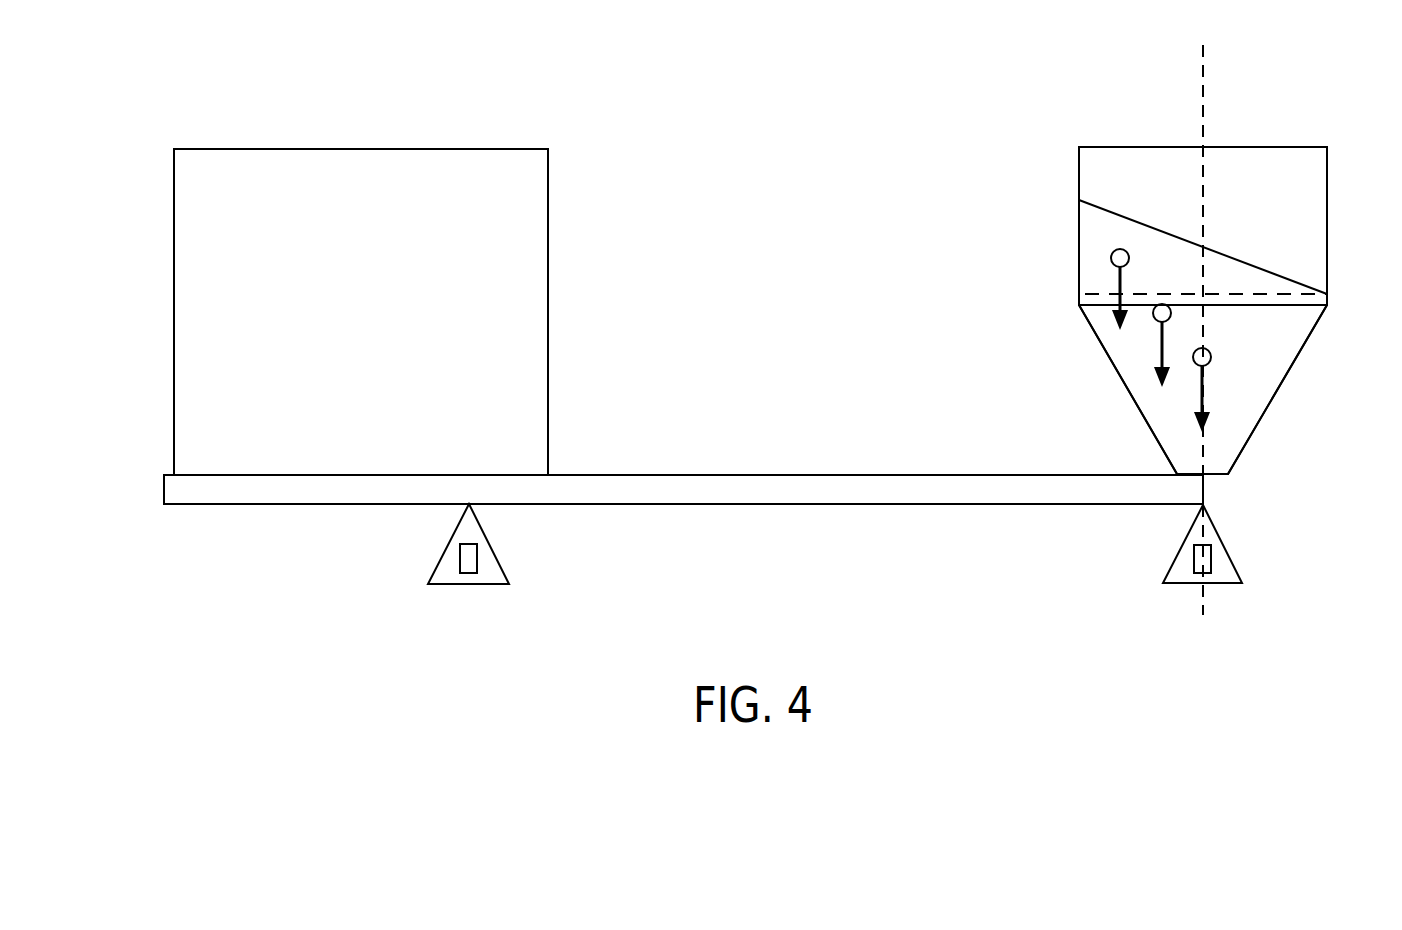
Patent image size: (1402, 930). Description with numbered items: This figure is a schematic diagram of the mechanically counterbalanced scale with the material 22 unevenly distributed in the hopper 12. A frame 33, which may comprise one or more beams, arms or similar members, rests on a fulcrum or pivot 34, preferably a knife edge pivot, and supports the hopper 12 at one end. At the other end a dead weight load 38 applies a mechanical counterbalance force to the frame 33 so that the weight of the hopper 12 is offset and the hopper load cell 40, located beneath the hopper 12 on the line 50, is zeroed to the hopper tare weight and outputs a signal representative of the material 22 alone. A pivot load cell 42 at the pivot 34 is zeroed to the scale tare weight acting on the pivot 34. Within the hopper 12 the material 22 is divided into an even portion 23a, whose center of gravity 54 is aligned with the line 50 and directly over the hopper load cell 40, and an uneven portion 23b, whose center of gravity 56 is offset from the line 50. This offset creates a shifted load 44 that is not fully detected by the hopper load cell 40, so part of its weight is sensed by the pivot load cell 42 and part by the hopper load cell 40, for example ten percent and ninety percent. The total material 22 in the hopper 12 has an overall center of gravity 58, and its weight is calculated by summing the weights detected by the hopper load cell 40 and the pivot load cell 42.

The hopper 12 is at (1300, 147).
The material 22 is at (1305, 235).
The even portion 23a is at (1256, 400).
The uneven portion 23b is at (1090, 228).
The frame 33 is at (661, 474).
The pivot 34 is at (450, 536).
The dead weight load 38 is at (548, 255).
The hopper load cell 40 is at (1211, 560).
The pivot load cell 42 is at (477, 558).
The shifted load 44 is at (1075, 110).
The line 50 is at (1205, 75).
The center of gravity 54 is at (1212, 355).
The center of gravity 56 is at (1110, 258).
The center of gravity 58 is at (1162, 304).